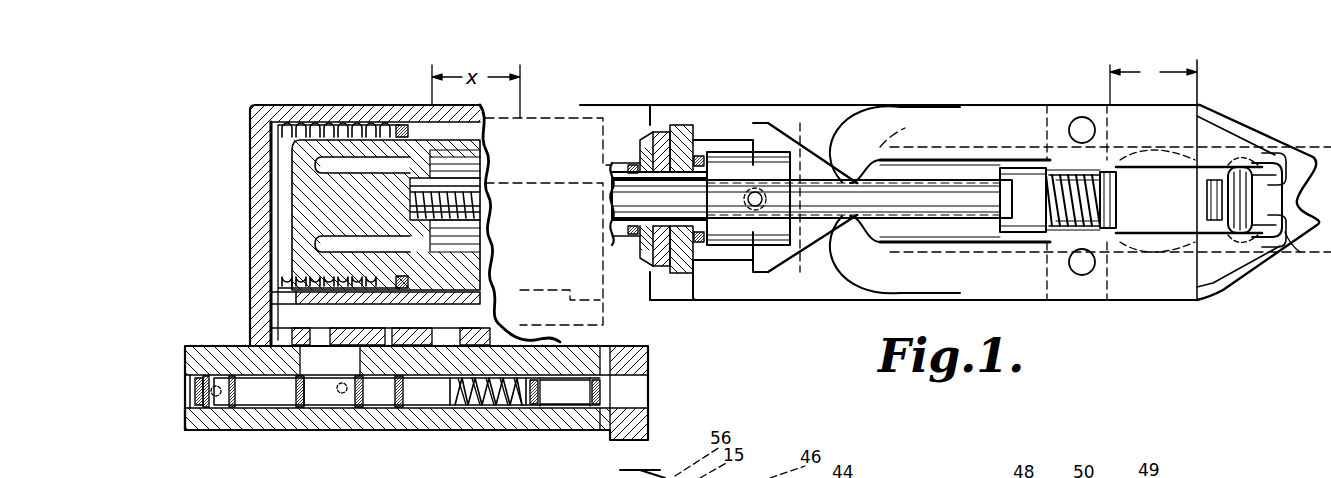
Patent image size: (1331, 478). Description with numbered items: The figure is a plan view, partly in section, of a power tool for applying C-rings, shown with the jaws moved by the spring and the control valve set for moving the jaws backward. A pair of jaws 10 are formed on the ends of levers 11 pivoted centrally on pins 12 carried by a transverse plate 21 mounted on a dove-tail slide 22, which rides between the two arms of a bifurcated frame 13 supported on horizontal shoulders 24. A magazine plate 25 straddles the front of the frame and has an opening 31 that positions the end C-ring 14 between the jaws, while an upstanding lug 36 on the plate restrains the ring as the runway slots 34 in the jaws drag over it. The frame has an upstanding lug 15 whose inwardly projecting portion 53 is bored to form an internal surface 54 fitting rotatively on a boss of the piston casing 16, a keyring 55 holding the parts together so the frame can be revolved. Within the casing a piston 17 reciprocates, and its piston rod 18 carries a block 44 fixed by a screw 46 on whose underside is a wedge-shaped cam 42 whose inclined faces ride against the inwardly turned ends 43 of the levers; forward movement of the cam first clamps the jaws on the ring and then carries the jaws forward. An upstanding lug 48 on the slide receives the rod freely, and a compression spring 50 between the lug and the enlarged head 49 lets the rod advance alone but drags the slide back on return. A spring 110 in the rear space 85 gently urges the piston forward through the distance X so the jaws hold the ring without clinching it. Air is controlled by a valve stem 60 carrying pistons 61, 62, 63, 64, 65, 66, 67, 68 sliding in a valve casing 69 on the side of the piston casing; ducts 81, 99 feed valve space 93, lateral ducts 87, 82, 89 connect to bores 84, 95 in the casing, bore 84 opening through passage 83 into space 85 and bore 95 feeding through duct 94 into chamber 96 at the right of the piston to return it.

The jaws 10 is at (1225, 136).
The levers 11 is at (972, 144).
The pins 12 is at (1082, 117).
The bifurcated frame 13 is at (828, 296).
The C-ring 14 is at (1272, 232).
The upstanding lug 15 is at (670, 290).
The piston casing 16 is at (262, 148).
The piston 17 is at (410, 272).
The piston rod 18 is at (528, 182).
The transverse plate 21 is at (1128, 106).
The slide 22 is at (922, 184).
The shoulders 24 is at (890, 147).
The magazine plate 25 is at (1278, 255).
The opening 31 is at (1258, 200).
The runway slots 34 is at (1138, 250).
The upstanding lug 36 is at (1207, 196).
The wedge-shaped cam 42 is at (790, 144).
The inwardly turned ends 43 is at (857, 190).
The block 44 is at (726, 208).
The screw 46 is at (760, 202).
The upstanding lug 48 is at (1022, 212).
The enlarged head 49 is at (1108, 196).
The helical coiled compression spring 50 is at (1058, 230).
The inwardly projecting portion 53 is at (662, 150).
The internal surface 54 is at (680, 125).
The keyring 55 is at (707, 160).
The valve stem 60 is at (266, 398).
The piston 61 is at (206, 408).
The piston 62 is at (232, 408).
The piston 63 is at (300, 408).
The piston 64 is at (359, 408).
The piston 65 is at (399, 408).
The piston 66 is at (460, 408).
The piston 67 is at (534, 408).
The piston 68 is at (596, 408).
The valve casing 69 is at (190, 432).
The duct 81 is at (342, 395).
The lateral duct 82 is at (338, 337).
The lateral passage 83 is at (282, 300).
The bore 84 is at (362, 325).
The space 85 is at (356, 124).
The lateral duct 87 is at (272, 336).
The lateral duct 89 is at (441, 337).
The valve space 93 is at (195, 390).
The duct 94 is at (580, 292).
The bore 95 is at (552, 326).
The piston chamber 96 is at (572, 249).
The duct 99 is at (200, 348).
The spring 110 is at (314, 125).